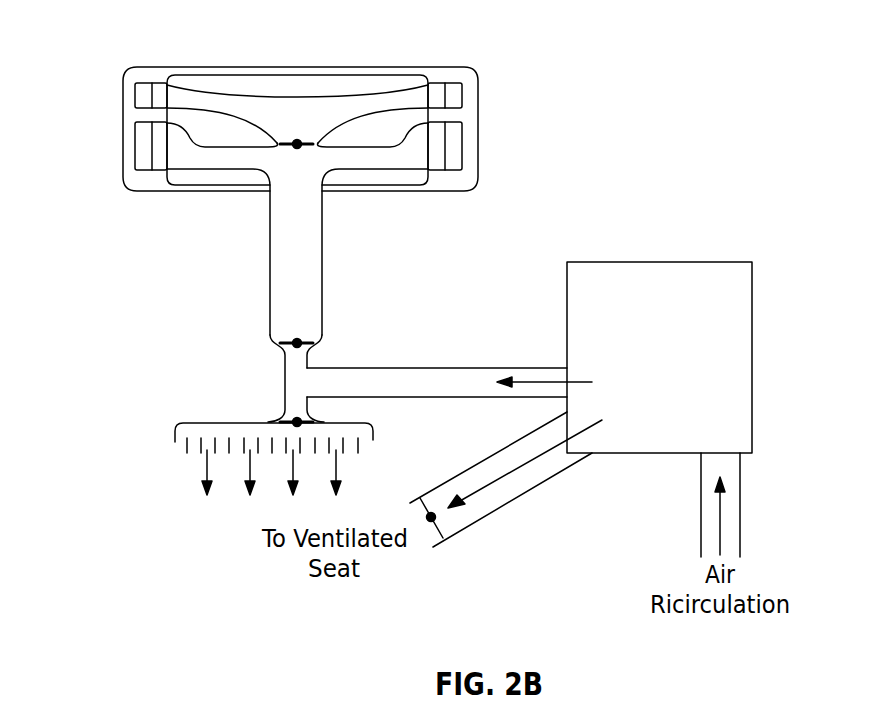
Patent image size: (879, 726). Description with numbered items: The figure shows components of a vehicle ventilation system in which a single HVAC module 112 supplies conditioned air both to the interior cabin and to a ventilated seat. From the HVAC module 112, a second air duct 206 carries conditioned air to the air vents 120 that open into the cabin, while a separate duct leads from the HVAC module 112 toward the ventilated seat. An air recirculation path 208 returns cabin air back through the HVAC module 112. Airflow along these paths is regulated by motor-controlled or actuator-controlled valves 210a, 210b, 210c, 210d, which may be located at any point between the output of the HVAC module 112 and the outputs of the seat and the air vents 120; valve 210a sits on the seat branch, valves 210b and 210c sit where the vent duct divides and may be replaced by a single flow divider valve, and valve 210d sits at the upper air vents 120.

The HVAC module 112 is at (680, 262).
The air vents 120 is at (123, 118).
The second air duct 206 is at (422, 378).
The air recirculation path 208 is at (740, 510).
The valve 210a is at (436, 522).
The valve 210b is at (296, 417).
The valve 210c is at (296, 339).
The valve 210d is at (297, 139).